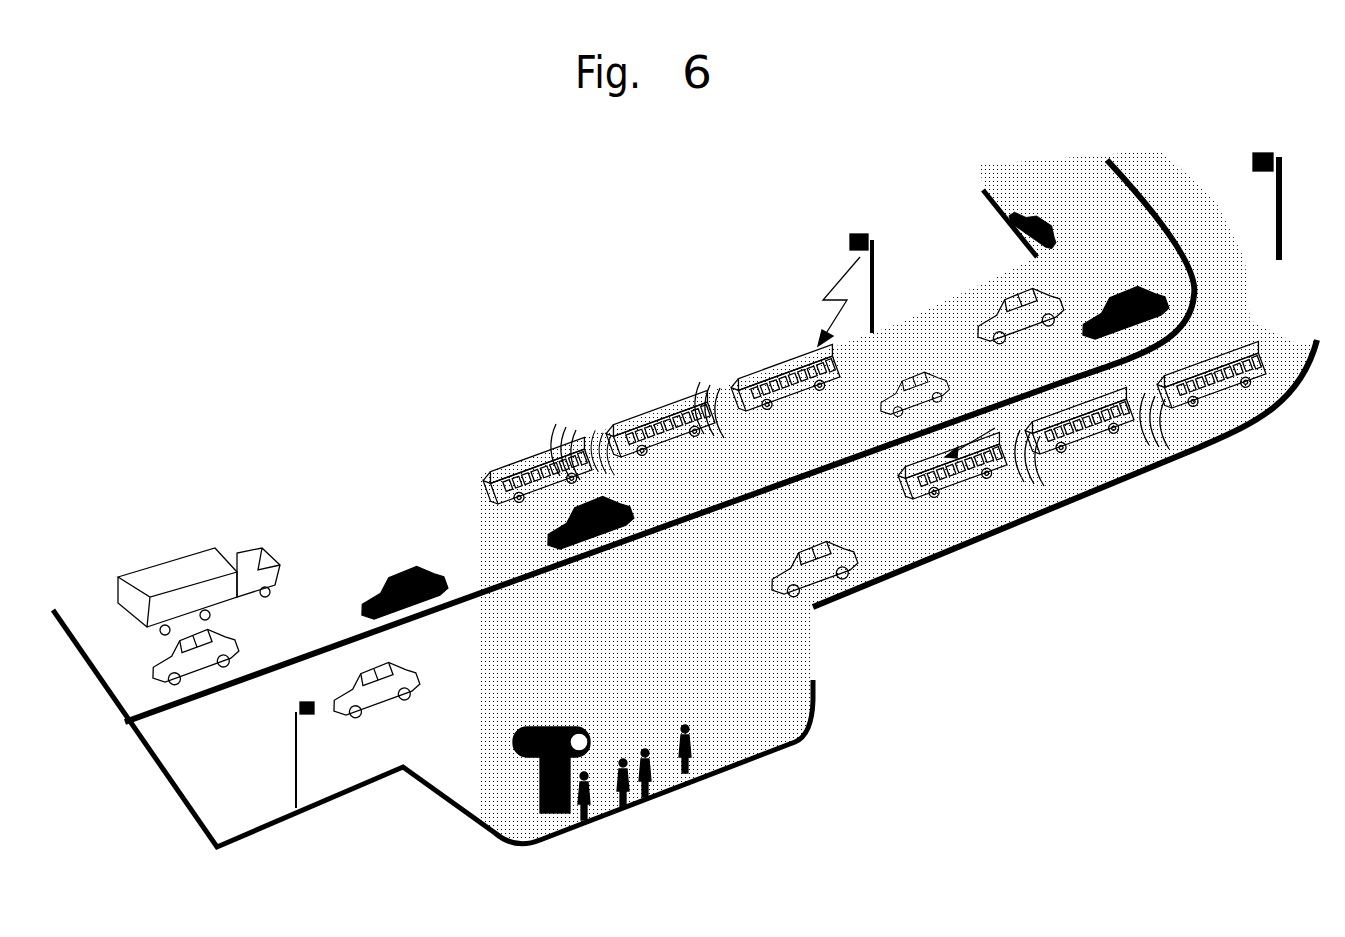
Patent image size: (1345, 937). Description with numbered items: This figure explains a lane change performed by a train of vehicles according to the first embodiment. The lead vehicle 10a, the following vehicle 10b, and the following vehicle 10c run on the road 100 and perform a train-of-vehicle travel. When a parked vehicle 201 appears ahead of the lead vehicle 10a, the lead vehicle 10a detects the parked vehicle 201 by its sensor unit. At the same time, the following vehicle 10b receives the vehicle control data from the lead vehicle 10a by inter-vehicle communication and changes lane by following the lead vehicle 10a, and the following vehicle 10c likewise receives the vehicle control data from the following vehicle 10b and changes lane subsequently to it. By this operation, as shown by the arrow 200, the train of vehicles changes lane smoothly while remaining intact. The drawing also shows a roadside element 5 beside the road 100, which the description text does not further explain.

The roadside communication unit 5 is at (857, 235).
The lead vehicle 10a is at (782, 360).
The following vehicle 10b is at (672, 396).
The following vehicle 10c is at (520, 445).
The road 100 is at (1290, 337).
The arrow 200 is at (930, 500).
The parked vehicle 201 is at (813, 610).